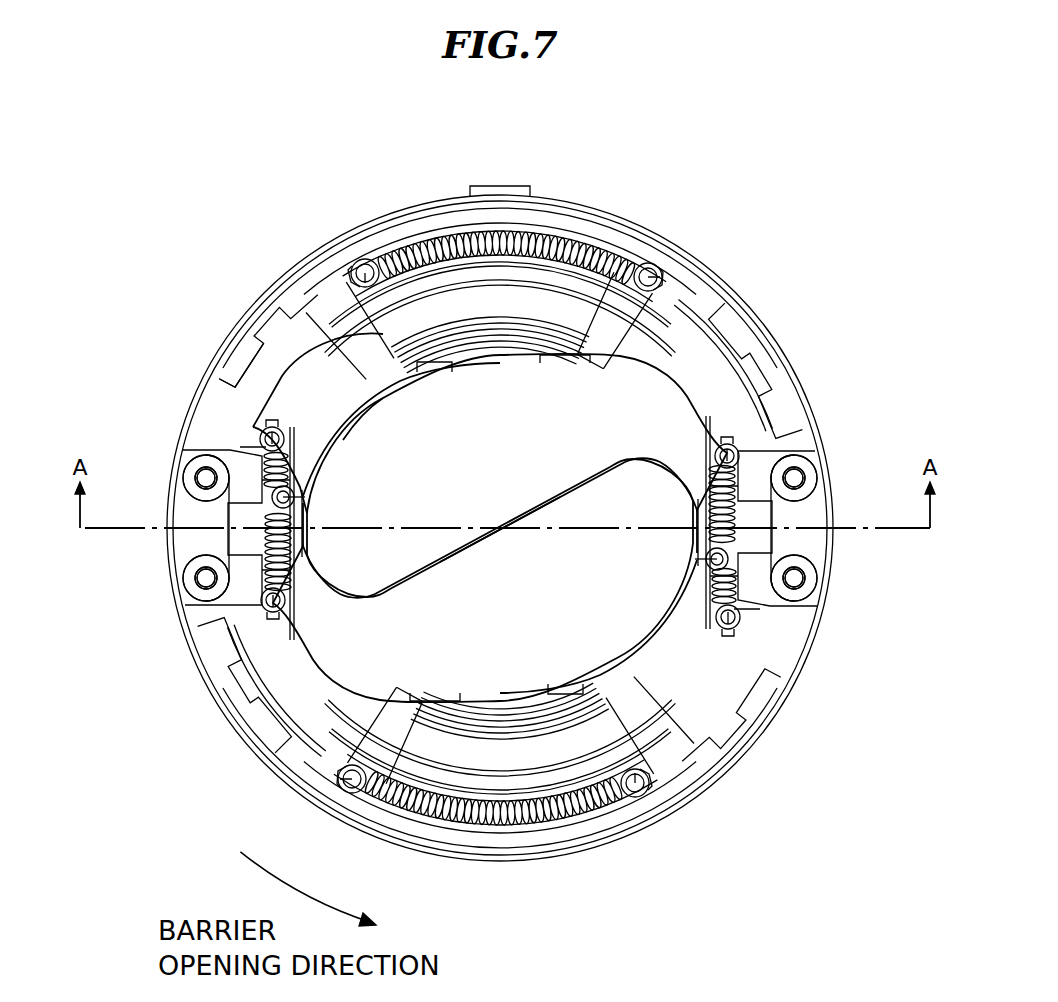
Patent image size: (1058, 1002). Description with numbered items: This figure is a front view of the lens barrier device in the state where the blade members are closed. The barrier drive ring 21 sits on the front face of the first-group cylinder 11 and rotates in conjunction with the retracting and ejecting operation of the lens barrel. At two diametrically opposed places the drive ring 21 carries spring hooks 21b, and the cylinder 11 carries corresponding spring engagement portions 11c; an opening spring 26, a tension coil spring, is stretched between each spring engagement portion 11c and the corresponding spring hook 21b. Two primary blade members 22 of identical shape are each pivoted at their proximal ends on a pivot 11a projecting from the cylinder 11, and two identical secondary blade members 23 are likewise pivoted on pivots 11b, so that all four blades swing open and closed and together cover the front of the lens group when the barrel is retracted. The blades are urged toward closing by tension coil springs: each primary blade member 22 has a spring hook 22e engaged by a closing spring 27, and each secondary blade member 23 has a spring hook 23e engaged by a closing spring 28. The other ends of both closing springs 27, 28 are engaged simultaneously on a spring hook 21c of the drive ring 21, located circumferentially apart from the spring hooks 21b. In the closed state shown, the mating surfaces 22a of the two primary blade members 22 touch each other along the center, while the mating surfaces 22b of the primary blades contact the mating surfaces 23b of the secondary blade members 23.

The first-group cylinder 11 is at (821, 612).
The pivot 11a is at (204, 578).
The pivot 11b is at (204, 478).
The spring engagement portion 11c is at (360, 264).
The barrier drive ring 21 is at (560, 290).
The spring hook 21b is at (656, 272).
The spring hook 21c is at (294, 499).
The primary blade member 22 is at (637, 383).
The mating surface 22a is at (562, 488).
The mating surface 22b is at (383, 420).
The spring hook 22e is at (286, 606).
The secondary blade member 23 is at (336, 398).
The mating surface 23b is at (253, 380).
The spring hook 23e is at (255, 432).
The opening spring 26 is at (422, 240).
The closing spring 27 is at (294, 562).
The closing spring 28 is at (250, 447).